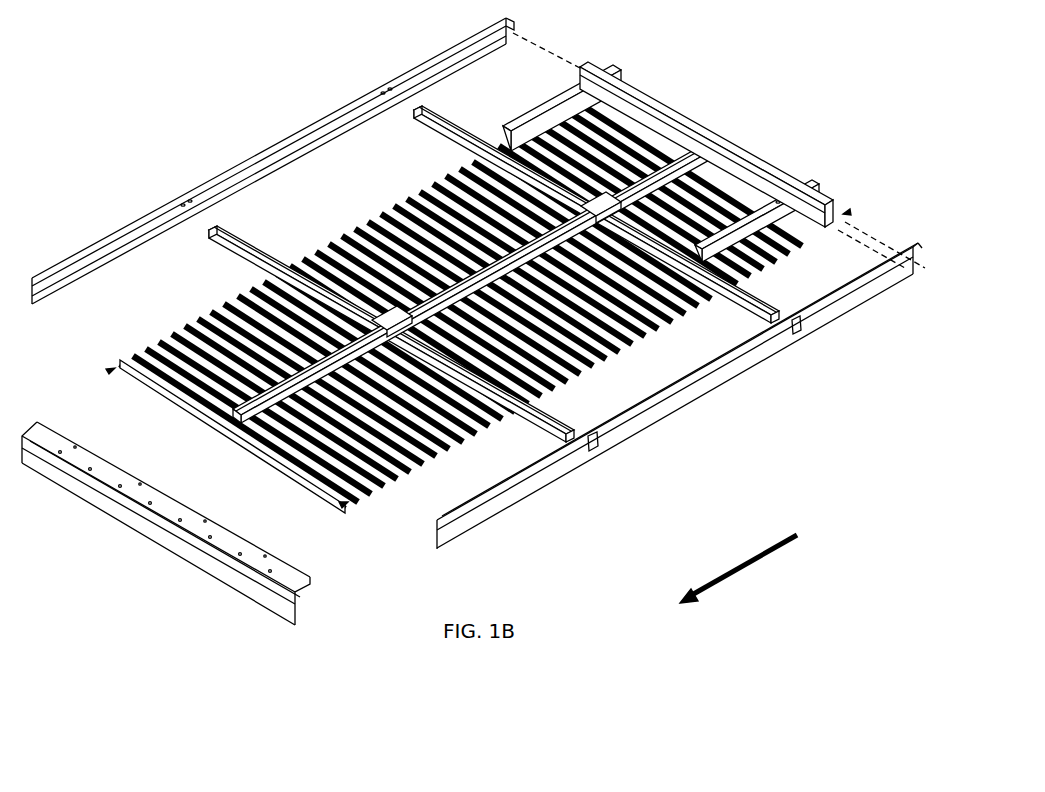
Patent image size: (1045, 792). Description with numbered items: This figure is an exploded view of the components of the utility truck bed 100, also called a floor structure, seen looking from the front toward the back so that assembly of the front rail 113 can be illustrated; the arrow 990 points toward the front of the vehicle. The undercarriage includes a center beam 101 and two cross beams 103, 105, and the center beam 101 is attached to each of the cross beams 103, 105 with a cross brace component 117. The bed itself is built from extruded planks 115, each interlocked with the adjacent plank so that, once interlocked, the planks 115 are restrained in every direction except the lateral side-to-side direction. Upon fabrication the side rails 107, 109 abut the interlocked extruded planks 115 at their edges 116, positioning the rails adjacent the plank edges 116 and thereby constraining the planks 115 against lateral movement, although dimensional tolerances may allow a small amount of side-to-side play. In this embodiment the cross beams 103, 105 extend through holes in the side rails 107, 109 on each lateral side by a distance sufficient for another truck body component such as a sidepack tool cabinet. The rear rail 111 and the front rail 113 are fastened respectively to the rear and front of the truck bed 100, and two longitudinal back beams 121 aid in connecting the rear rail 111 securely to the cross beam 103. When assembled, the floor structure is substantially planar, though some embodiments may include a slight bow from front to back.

The utility truck bed 100 is at (161, 696).
The center beam 101 is at (680, 143).
The cross beam 103 is at (422, 117).
The cross beam 105 is at (218, 238).
The side rail 107 is at (93, 257).
The side rail 109 is at (497, 517).
The rear rail 111 is at (767, 163).
The front rail 113 is at (183, 513).
The extruded plank 115 is at (147, 343).
The edges 116 is at (848, 213).
The cross brace component 117 is at (590, 194).
The longitudinal back beam 121 is at (560, 103).
The arrow 990 is at (747, 557).